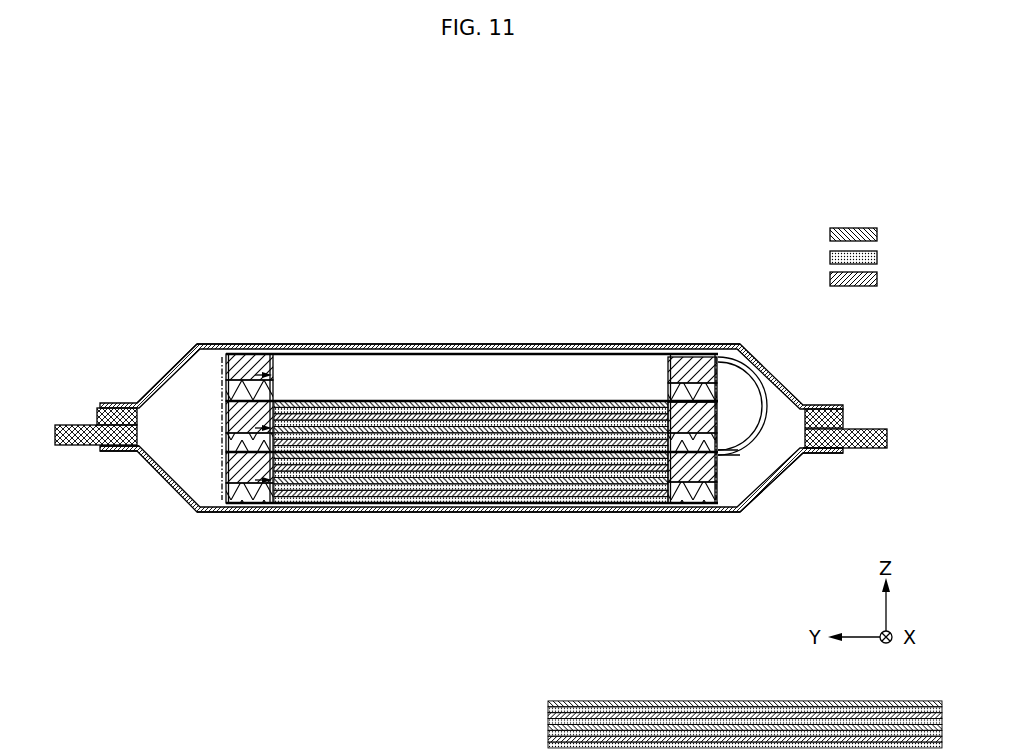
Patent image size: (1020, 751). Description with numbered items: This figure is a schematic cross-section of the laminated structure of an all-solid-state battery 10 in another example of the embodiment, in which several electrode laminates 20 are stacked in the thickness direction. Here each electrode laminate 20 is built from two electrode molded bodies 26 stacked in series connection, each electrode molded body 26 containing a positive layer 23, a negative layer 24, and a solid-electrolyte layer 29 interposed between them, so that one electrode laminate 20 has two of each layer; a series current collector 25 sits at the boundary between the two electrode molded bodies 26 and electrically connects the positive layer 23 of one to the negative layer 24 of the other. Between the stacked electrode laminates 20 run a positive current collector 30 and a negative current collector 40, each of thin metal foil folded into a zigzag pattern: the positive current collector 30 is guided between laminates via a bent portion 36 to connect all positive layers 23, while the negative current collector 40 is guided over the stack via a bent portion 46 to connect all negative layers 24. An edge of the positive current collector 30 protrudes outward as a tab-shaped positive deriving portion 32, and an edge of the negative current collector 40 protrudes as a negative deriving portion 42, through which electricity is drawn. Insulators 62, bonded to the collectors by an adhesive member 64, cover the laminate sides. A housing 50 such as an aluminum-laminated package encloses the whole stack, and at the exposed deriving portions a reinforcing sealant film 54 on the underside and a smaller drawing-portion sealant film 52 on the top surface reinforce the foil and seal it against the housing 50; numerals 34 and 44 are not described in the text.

The all-solid-state battery 10 is at (237, 250).
The electrode laminate 20 is at (230, 400).
The positive layer 23 is at (870, 234).
The negative layer 24 is at (870, 280).
The series current collector 25 is at (682, 368).
The electrode molded body 26 is at (677, 365).
The solid-electrolyte layer 29 is at (870, 257).
The positive current collector 30 is at (718, 402).
The positive deriving portion 32 is at (879, 430).
The lower case wall 34 is at (395, 512).
The bent portion 36 is at (222, 488).
The negative current collector 40 is at (224, 452).
The negative deriving portion 42 is at (70, 425).
The upper case wall 44 is at (409, 344).
The bent portion 46 is at (762, 441).
The housing 50 is at (213, 343).
The drawing-portion sealant film 52 is at (100, 409).
The reinforcing sealant film 54 is at (70, 451).
The insulator 62 is at (226, 370).
The adhesive member 64 is at (222, 392).